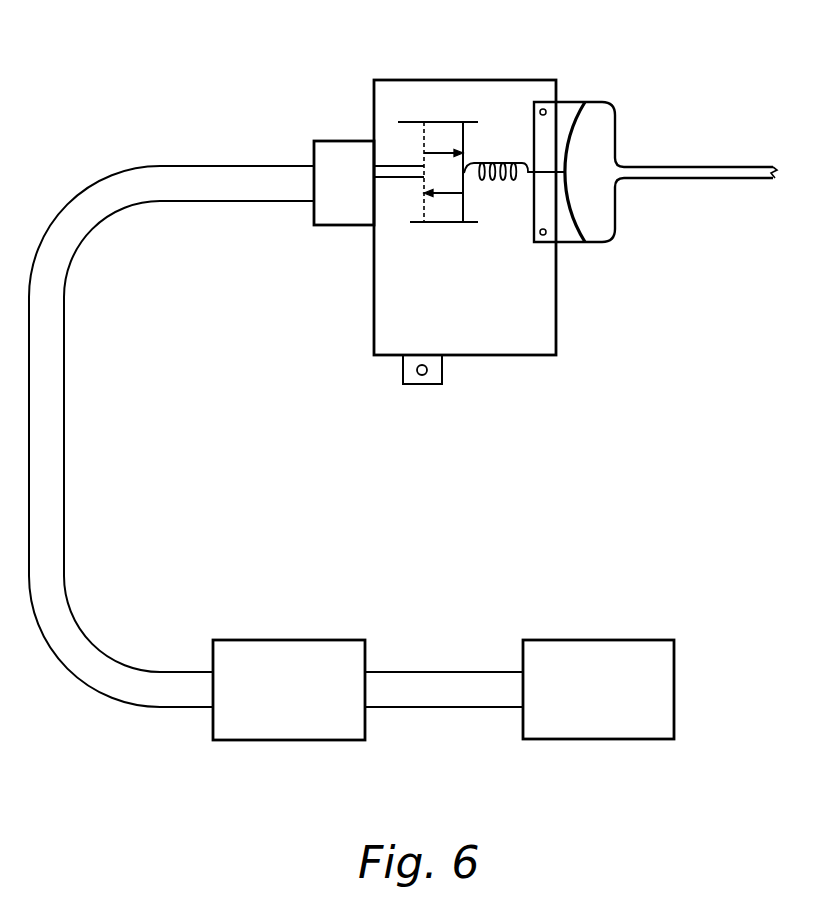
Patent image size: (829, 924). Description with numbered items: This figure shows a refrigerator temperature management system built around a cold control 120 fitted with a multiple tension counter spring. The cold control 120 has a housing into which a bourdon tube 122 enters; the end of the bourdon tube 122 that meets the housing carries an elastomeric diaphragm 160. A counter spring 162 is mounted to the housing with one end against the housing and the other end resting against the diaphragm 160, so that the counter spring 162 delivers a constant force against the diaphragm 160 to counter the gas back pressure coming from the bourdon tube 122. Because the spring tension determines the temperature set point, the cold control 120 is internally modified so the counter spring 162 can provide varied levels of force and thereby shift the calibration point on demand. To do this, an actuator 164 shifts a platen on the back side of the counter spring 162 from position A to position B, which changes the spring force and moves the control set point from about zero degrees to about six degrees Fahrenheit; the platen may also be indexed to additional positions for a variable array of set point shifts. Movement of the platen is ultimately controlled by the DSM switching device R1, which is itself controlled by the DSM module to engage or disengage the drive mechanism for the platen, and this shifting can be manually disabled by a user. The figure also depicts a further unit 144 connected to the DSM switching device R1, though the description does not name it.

The cold control device 120 is at (508, 357).
The bourdon tube 122 is at (697, 167).
The control unit 144 is at (603, 640).
The elastomeric diaphragm 160 is at (561, 200).
The counter spring 162 is at (498, 192).
The actuator 164 is at (314, 147).
The DSM switching device R1 is at (280, 640).
The position A is at (470, 136).
The position B is at (416, 198).